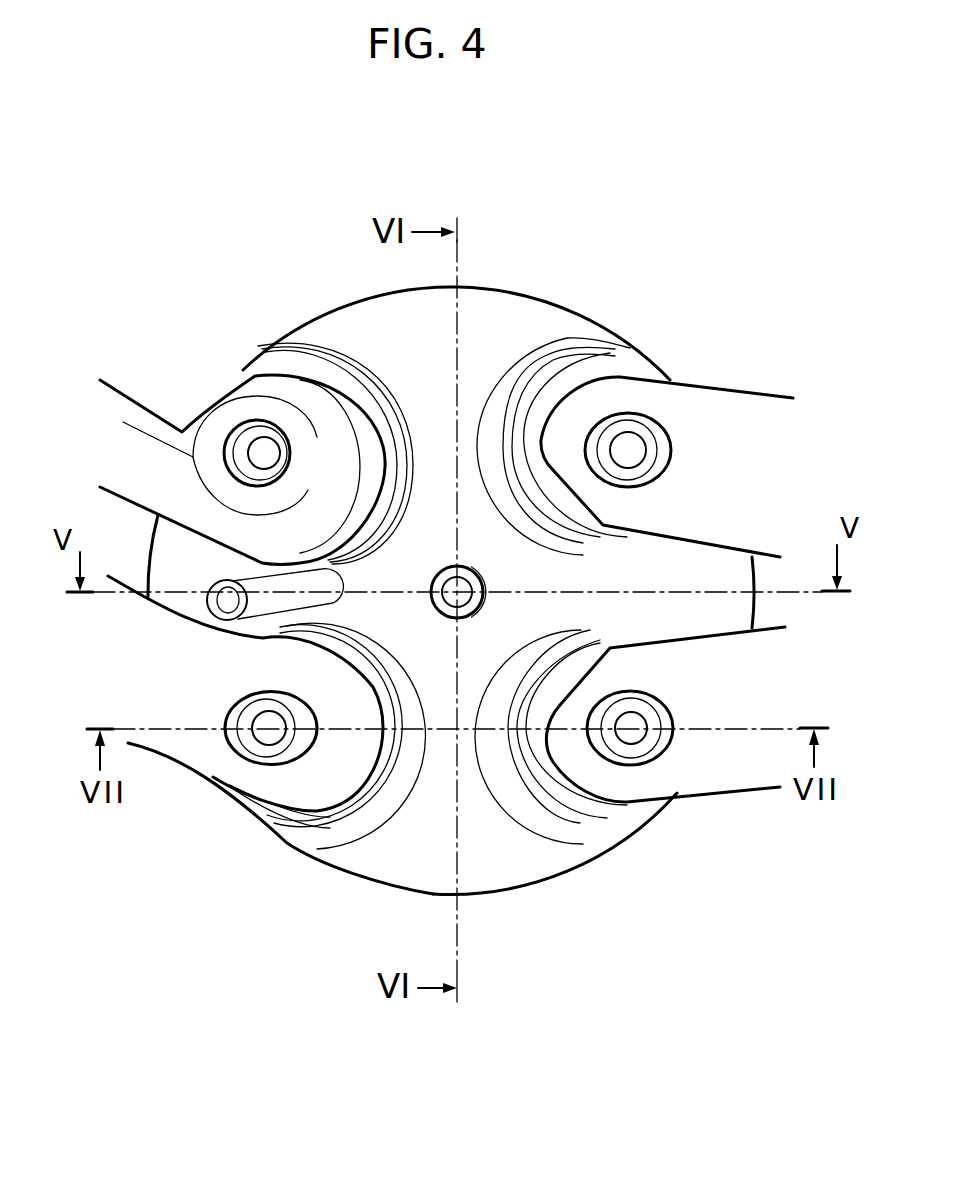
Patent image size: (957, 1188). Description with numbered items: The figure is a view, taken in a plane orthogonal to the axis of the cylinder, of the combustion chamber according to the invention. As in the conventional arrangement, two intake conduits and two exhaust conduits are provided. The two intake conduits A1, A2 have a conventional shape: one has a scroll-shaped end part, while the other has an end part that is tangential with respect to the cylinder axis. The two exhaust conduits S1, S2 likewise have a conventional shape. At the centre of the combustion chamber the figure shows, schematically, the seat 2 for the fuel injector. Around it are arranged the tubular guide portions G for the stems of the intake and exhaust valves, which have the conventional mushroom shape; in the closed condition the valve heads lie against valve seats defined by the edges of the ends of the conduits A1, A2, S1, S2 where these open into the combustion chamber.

The seat 2 is at (477, 600).
The intake conduit A1 is at (137, 403).
The intake conduit A2 is at (175, 745).
The exhaust conduit S1 is at (767, 393).
The exhaust conduit S2 is at (717, 793).
The tubular guide portion G is at (270, 453).